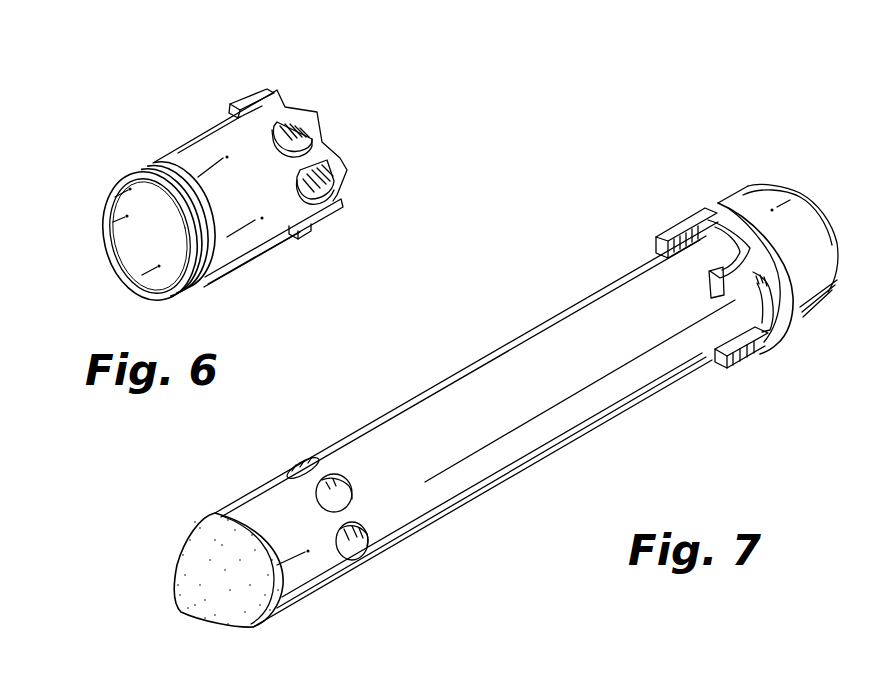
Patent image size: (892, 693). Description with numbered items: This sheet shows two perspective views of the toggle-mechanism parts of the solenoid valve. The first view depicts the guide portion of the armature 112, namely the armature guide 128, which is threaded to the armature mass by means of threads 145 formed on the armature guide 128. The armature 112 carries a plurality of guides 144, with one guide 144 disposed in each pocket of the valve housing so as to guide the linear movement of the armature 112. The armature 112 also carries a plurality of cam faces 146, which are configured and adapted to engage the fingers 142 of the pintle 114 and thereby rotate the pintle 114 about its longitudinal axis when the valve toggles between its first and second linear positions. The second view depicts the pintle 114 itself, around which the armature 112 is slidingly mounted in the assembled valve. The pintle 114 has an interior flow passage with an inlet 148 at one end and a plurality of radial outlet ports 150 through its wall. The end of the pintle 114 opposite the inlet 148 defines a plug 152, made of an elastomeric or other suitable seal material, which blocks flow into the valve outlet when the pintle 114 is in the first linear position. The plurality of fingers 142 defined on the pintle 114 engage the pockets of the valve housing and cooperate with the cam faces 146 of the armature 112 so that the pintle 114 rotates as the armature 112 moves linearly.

In FIG. 6, the armature 112 is at (136, 86).
In FIG. 6, the threads 145 is at (128, 176).
In FIG. 6, the armature guide 128 is at (185, 140).
In FIG. 6, the cam faces 146 is at (284, 108).
In FIG. 6, the guides 144 is at (246, 95).
In FIG. 7, the pintle 114 is at (494, 321).
In FIG. 7, the plug 152 is at (222, 613).
In FIG. 7, the radial outlet ports 150 is at (305, 462).
In FIG. 7, the inlet 148 is at (810, 190).
In FIG. 7, the fingers 142 is at (680, 225).